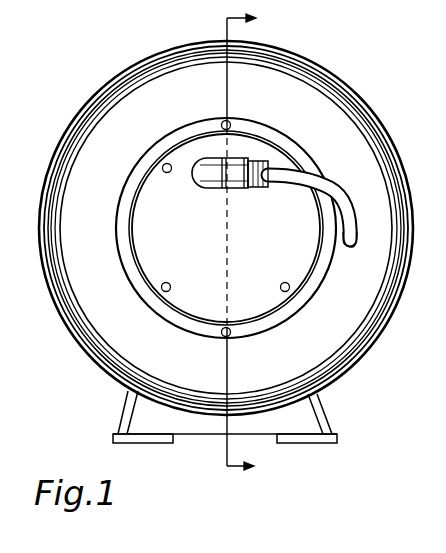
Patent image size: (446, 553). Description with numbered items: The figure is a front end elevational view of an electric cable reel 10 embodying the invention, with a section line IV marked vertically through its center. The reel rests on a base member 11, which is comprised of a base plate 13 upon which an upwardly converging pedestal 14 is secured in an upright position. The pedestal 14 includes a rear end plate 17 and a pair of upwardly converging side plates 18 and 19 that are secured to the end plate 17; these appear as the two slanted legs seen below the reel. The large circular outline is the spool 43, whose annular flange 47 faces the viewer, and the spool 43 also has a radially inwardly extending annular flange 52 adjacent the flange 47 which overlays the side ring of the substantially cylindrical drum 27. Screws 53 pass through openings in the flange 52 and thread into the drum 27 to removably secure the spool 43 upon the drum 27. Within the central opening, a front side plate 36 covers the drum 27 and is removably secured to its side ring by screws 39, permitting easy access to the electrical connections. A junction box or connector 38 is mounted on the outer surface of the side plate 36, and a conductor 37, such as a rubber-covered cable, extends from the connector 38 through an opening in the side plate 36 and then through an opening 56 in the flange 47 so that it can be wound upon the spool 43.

The electric cable reel 10 is at (96, 371).
The spool 43 is at (349, 85).
The annular flange 47 is at (157, 78).
The radially inwardly extending annular flange 52 is at (264, 139).
The front side plate 36 is at (256, 246).
The screws 53 is at (230, 122).
The drum 27 is at (191, 298).
The screws 39 is at (172, 171).
The junction box or connector 38 is at (214, 189).
The conductor 37 is at (305, 180).
The opening in the flange 56 is at (356, 237).
The side plate 18 is at (128, 411).
The pedestal 14 is at (301, 410).
The rear end plate 17 is at (225, 424).
The base plate 13 is at (307, 441).
The base member 11 is at (326, 413).
The side plate 19 is at (330, 428).
The section line IV is at (255, 245).